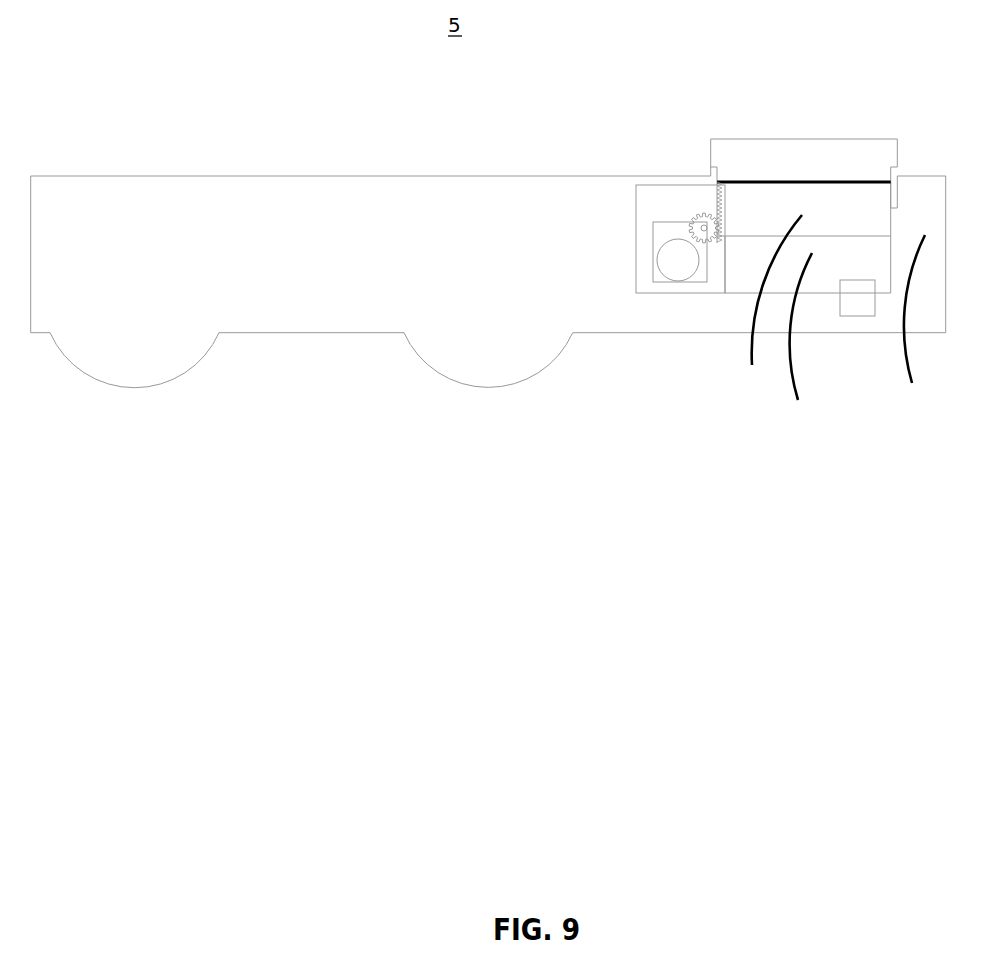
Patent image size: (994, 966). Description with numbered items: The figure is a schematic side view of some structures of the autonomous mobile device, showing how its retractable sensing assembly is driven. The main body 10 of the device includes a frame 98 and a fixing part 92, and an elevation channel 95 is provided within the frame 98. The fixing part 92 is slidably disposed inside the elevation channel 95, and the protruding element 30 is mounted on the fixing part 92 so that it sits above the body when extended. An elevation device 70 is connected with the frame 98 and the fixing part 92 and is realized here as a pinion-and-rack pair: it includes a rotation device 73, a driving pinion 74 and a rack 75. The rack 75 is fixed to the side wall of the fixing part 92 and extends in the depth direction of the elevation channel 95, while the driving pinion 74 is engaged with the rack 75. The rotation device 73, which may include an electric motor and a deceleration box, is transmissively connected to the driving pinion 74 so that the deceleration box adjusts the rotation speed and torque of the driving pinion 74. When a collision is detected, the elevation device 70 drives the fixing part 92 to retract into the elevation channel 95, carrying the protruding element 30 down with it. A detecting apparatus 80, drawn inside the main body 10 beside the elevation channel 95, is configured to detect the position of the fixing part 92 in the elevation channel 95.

The main body 10 is at (352, 185).
The protruding element 30 is at (802, 155).
The elevation device 70 is at (689, 309).
The rotation device 73 is at (662, 266).
The driving pinion 74 is at (700, 229).
The rack 75 is at (718, 211).
The detecting apparatus 80 is at (856, 316).
The fixing part 92 is at (766, 314).
The elevation channel 95 is at (798, 344).
The frame 98 is at (912, 325).